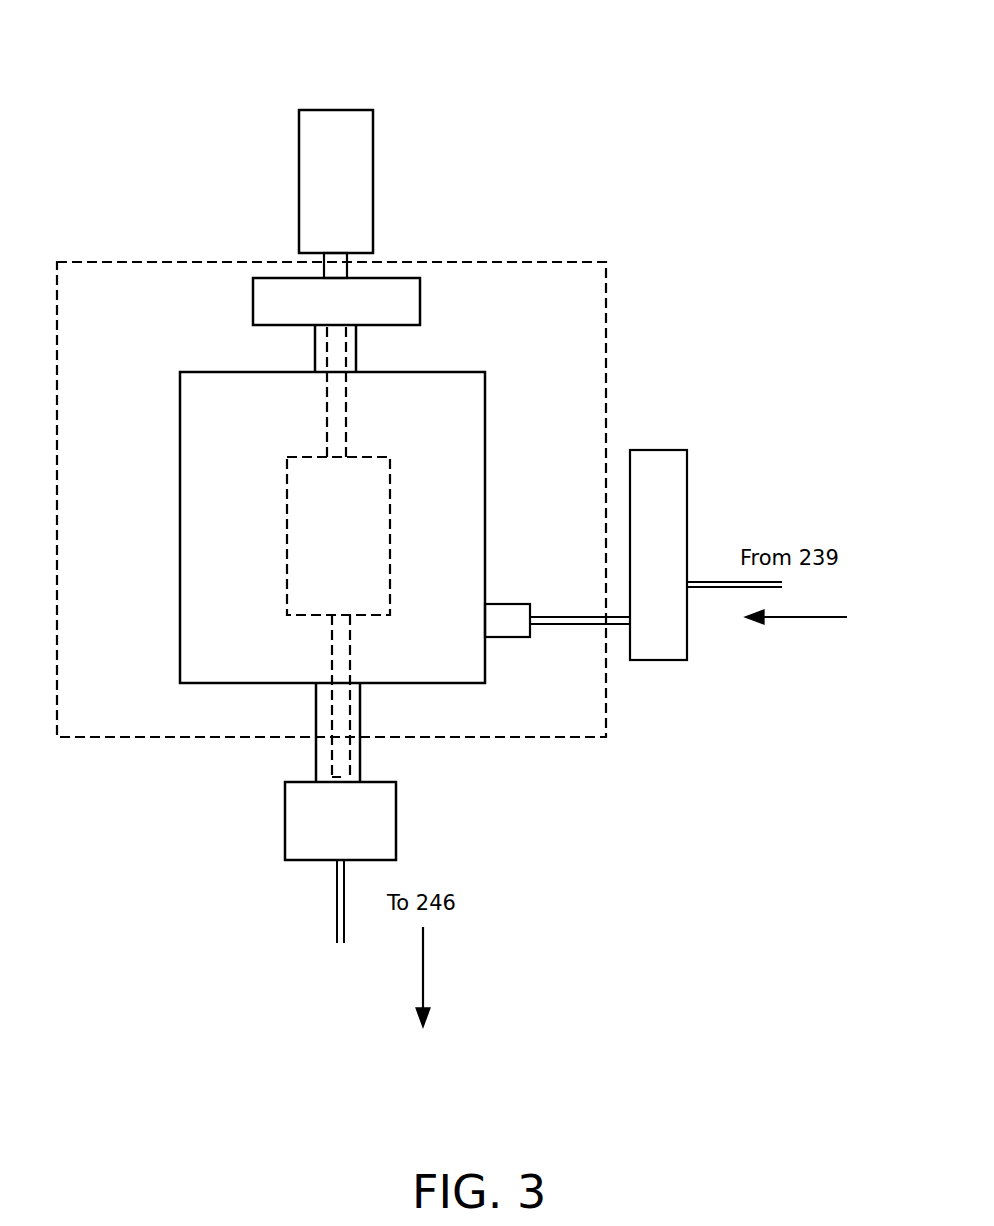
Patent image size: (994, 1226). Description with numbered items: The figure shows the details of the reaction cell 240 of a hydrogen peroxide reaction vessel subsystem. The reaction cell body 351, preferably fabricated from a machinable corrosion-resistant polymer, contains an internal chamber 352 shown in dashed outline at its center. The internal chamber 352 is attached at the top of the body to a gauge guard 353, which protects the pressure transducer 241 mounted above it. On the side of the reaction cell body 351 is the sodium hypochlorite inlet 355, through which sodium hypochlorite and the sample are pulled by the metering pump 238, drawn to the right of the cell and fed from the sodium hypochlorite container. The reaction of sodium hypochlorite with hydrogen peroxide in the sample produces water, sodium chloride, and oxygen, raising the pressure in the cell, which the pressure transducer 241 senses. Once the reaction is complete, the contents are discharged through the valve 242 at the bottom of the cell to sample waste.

The reaction cell 240 is at (575, 262).
The pressure transducer 241 is at (375, 140).
The gauge guard 353 is at (397, 275).
The reaction cell body 351 is at (225, 372).
The internal chamber 352 is at (370, 457).
The sodium hypochlorite inlet 355 is at (515, 637).
The metering pump 238 is at (660, 450).
The valve 242 is at (397, 820).